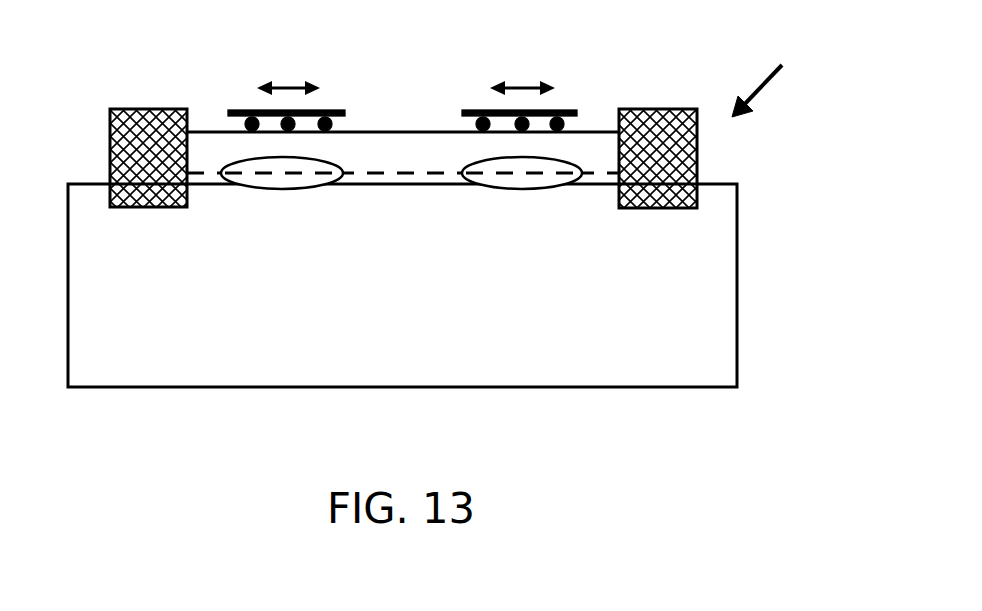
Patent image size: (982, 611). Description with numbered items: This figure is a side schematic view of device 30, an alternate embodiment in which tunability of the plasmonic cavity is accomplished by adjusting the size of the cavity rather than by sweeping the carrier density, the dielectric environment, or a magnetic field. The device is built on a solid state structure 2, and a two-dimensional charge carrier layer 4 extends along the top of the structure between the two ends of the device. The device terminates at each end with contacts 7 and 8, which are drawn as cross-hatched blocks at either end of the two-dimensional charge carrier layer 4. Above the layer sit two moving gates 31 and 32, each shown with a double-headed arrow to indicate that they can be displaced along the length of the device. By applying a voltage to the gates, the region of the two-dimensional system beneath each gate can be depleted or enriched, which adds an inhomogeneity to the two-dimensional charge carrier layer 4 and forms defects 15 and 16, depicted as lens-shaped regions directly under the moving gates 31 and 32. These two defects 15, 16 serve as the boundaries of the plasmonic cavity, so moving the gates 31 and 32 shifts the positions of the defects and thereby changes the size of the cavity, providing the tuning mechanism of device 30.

The structure 2 is at (153, 375).
The two-dimensional charge carrier layer 4 is at (407, 175).
The contact 7 is at (137, 128).
The contact 8 is at (652, 137).
The defect 15 is at (270, 190).
The defect 16 is at (533, 190).
The device 30 is at (786, 69).
The moving gate 31 is at (245, 111).
The moving gate 32 is at (558, 113).